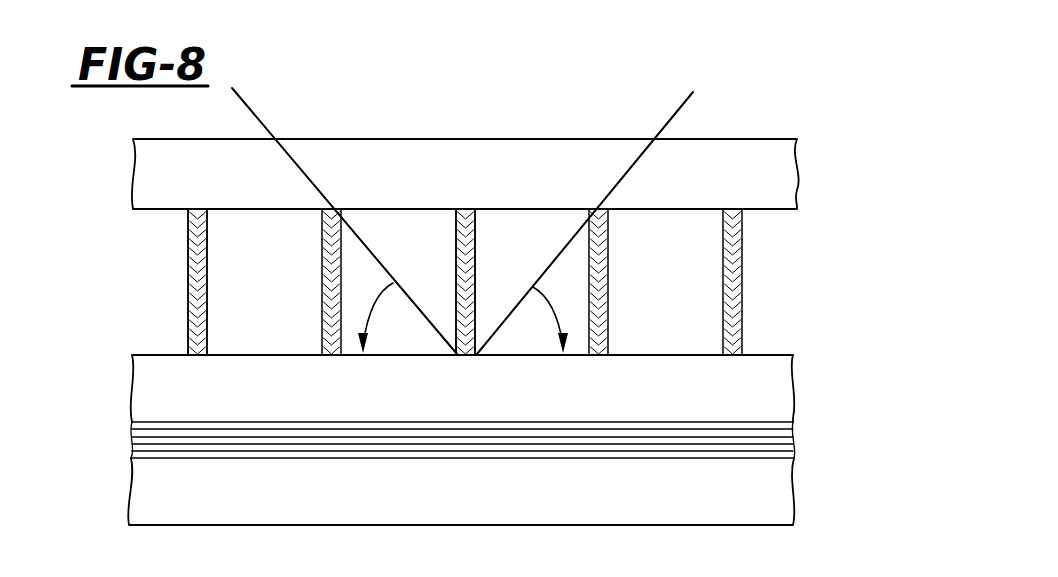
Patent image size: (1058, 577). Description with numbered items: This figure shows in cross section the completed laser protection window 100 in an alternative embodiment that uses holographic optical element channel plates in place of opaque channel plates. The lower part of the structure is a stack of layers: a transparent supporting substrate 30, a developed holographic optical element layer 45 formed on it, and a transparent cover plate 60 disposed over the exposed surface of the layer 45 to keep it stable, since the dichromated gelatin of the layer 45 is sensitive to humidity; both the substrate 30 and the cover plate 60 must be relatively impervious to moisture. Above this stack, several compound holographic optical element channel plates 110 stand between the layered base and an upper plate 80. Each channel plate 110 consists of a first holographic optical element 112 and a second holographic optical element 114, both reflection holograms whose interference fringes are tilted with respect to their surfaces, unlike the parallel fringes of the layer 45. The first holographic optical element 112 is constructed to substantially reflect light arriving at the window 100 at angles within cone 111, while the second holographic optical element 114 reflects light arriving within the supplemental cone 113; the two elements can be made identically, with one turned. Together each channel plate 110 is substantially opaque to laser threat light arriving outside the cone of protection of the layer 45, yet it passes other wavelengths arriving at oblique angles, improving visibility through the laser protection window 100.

The upper substrate plate 80 is at (797, 165).
The transparent supporting substrate 30 is at (790, 388).
The holographic optical element layer 45 is at (795, 432).
The transparent cover plate 60 is at (797, 490).
The compound holographic optical element channel plate 110 is at (197, 208).
The first holographic optical element 112 is at (188, 278).
The second holographic optical element 114 is at (208, 255).
The laser protection window 100 is at (380, 95).
The cone 111 is at (372, 315).
The cone 113 is at (543, 312).